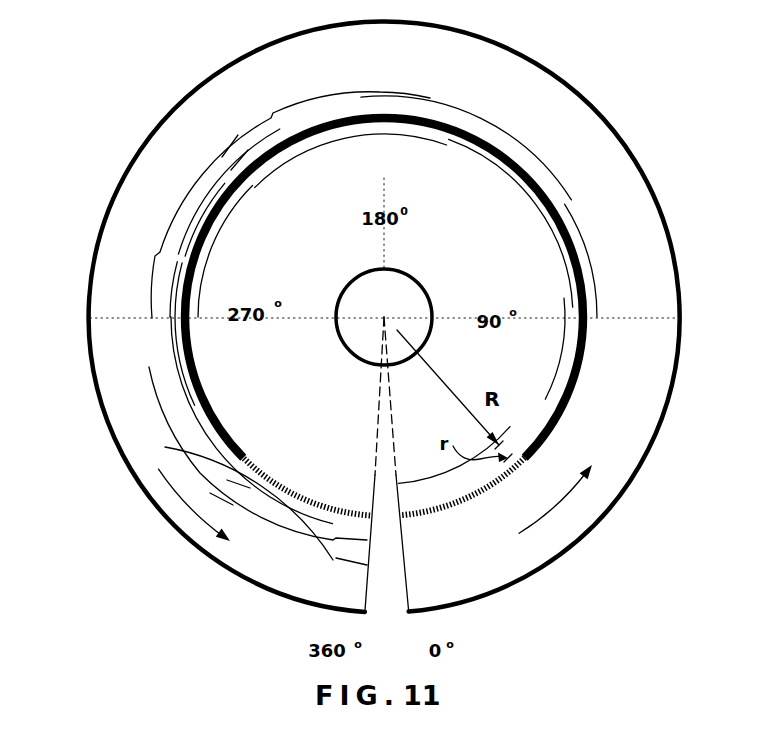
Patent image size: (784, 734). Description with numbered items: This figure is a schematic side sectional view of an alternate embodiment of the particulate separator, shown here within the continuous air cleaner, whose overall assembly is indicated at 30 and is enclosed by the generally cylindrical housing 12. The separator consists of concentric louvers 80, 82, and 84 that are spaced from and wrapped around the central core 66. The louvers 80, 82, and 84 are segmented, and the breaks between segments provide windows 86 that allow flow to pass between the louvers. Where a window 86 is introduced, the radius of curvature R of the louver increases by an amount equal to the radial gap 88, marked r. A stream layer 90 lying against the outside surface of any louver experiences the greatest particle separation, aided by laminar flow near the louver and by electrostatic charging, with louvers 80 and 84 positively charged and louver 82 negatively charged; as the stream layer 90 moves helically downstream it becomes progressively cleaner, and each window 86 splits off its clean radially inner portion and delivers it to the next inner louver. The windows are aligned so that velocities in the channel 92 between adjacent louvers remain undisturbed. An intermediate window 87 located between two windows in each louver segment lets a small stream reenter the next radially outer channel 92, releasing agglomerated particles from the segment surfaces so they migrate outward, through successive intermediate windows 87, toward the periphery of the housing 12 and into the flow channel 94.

The rolled sheet assembly 30 is at (206, 44).
The housing 12 is at (616, 133).
The core 66 is at (433, 304).
The louver 80 is at (187, 367).
The louver 82 is at (187, 409).
The louver 84 is at (168, 450).
The window 86 is at (528, 158).
The intermediate window 87 is at (569, 210).
The radial gap 88 is at (515, 434).
The stream layer 90 is at (480, 504).
The channel 92 is at (549, 387).
The flow channel 94 is at (492, 77).